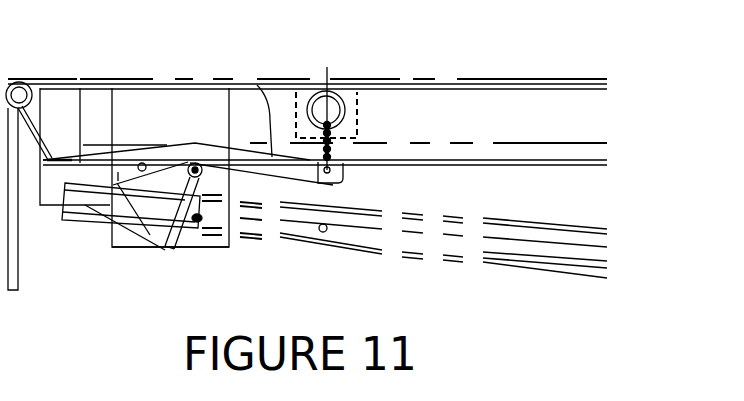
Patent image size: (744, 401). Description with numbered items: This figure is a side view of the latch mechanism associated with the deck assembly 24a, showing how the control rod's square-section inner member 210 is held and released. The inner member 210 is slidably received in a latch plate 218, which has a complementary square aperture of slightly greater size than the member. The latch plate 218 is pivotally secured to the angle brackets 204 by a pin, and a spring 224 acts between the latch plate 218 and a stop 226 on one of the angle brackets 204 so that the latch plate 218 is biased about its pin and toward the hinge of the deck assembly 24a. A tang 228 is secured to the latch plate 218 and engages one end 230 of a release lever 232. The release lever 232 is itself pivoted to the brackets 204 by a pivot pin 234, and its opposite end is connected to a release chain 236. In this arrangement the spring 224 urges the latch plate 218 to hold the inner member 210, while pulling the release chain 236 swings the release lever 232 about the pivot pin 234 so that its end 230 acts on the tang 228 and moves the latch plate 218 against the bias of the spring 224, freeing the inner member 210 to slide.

The deck assembly 24a is at (497, 80).
The angle brackets 204 is at (125, 104).
The pivot pin 234 is at (143, 153).
The release lever 232 is at (257, 84).
The release chain 236 is at (332, 148).
The end of release lever 230 is at (67, 226).
The tang 228 is at (112, 247).
The latch plate 218 is at (170, 250).
The spring 224 is at (195, 225).
The stop 226 is at (250, 238).
The inner member 210 is at (510, 261).